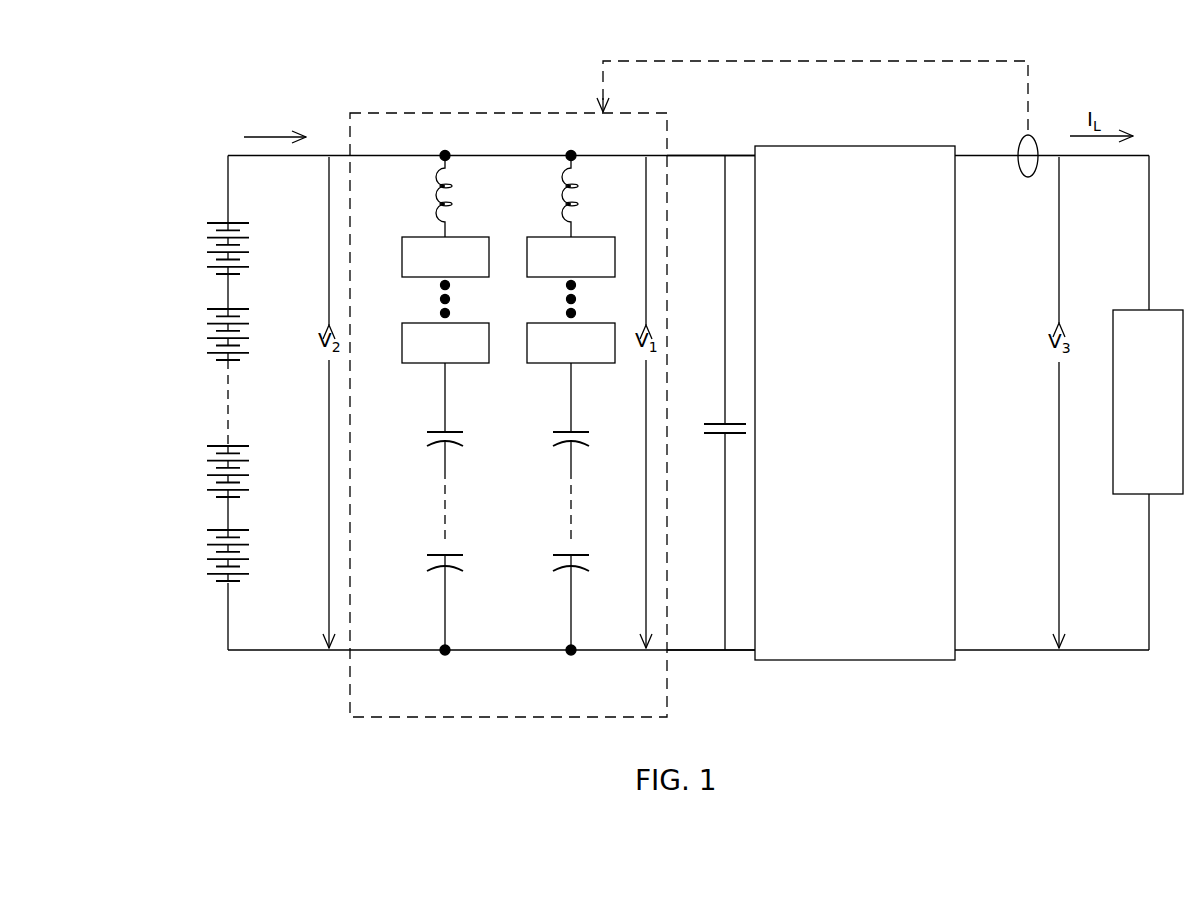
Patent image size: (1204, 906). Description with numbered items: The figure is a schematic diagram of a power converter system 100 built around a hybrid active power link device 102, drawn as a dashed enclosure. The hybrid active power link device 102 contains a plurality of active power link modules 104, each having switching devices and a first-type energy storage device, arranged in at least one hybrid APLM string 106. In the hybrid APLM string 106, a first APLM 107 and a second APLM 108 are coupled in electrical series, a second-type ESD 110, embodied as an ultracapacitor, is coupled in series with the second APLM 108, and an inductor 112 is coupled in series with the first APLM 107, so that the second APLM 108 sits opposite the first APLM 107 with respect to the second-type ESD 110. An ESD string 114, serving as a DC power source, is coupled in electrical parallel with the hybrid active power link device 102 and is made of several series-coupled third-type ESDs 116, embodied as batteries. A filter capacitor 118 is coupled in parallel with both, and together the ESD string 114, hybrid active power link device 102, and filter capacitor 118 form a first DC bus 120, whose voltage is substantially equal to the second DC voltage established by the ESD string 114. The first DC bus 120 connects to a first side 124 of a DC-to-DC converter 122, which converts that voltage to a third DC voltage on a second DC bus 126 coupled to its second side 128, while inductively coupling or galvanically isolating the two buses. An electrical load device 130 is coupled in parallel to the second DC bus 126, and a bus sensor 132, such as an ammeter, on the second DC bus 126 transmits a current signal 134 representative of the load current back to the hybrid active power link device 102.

The power converter system 100 is at (253, 90).
The hybrid active power link device 102 is at (458, 113).
The active power link module 104 is at (563, 230).
The hybrid APLM string 106 is at (561, 582).
The first APLM 107 is at (471, 278).
The second APLM 108 is at (576, 364).
The second-type ESD 110 is at (452, 445).
The inductor 112 is at (432, 195).
The ESD string 114 is at (238, 587).
The third-type ESD 116 is at (232, 446).
The filter capacitor 118 is at (722, 437).
The first DC bus 120 is at (688, 650).
The DC-to-DC converter 122 is at (836, 396).
The first side 124 is at (704, 127).
The second DC bus 126 is at (1018, 650).
The second side 128 is at (998, 146).
The electrical load device 130 is at (1133, 408).
The bus sensor 132 is at (1028, 178).
The current signal 134 is at (815, 63).